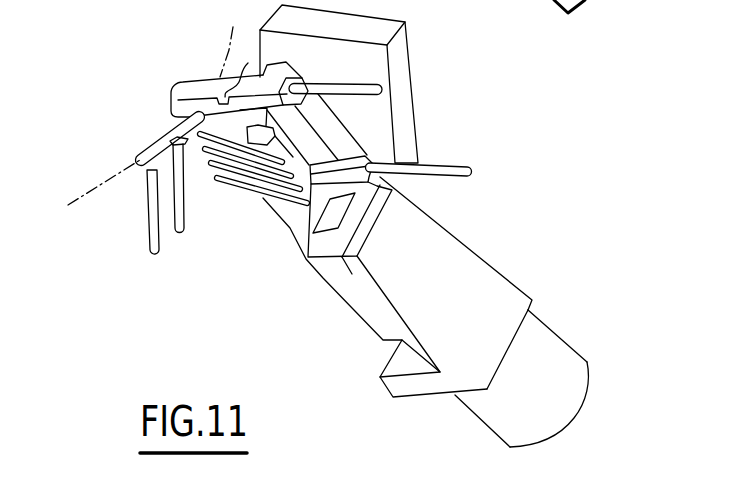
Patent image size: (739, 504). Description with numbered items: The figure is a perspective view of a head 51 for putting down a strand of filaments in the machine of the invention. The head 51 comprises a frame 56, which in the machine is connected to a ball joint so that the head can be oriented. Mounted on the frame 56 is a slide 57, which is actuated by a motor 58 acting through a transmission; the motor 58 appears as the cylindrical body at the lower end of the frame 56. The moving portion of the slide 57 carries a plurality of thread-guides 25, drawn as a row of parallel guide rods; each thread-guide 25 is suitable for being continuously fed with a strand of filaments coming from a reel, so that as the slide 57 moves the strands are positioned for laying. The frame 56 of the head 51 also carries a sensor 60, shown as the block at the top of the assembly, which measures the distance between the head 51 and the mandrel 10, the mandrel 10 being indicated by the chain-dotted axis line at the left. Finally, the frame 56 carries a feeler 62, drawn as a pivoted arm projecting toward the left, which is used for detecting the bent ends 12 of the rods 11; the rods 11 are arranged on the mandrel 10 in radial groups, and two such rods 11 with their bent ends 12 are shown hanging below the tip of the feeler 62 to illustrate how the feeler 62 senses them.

The mandrel 10 is at (97, 187).
The rods 11 is at (178, 232).
The bent ends 12 is at (158, 165).
The thread-guides 25 is at (252, 192).
The head 51 is at (478, 207).
The frame 56 is at (497, 283).
The slide 57 is at (310, 215).
The motor 58 is at (546, 348).
The sensor 60 is at (398, 90).
The feeler 62 is at (166, 140).